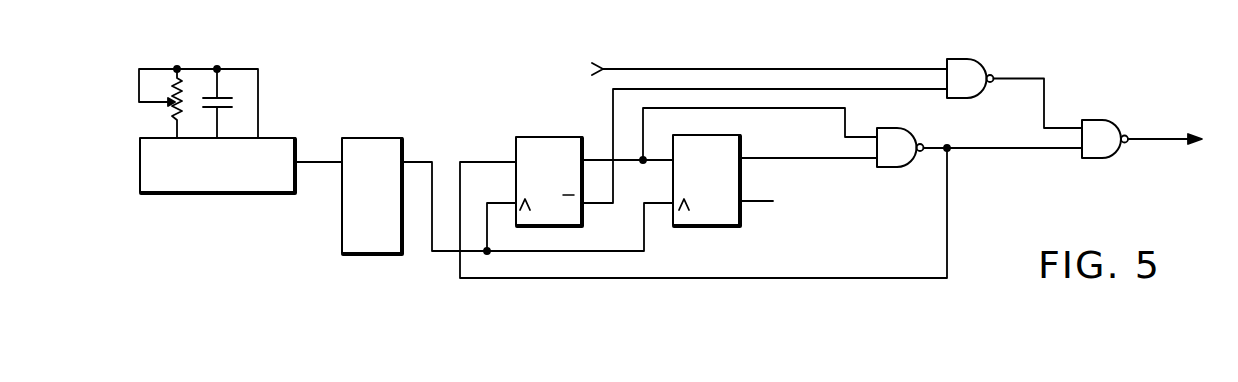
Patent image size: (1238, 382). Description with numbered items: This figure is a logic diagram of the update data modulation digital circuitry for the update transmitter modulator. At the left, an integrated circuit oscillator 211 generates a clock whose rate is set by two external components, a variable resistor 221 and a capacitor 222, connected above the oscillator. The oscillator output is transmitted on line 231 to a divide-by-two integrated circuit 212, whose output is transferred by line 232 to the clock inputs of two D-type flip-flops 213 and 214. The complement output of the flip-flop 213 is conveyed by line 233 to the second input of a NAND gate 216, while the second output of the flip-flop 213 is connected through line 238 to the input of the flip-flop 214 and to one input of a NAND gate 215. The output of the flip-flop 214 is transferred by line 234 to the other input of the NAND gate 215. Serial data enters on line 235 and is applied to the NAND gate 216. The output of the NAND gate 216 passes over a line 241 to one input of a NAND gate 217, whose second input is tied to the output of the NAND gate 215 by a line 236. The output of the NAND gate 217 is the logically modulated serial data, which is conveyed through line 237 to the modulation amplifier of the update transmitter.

The integrated circuit oscillator 211 is at (267, 143).
The variable resistor 221 is at (172, 92).
The capacitor 222 is at (228, 100).
The line 231 is at (321, 160).
The divide-by-two integrated circuit 212 is at (380, 148).
The line 232 is at (422, 158).
The D-type flip-flop 213 is at (536, 146).
The line 238 is at (597, 157).
The line 233 is at (598, 204).
The D-type flip-flop 214 is at (724, 150).
The line 234 is at (800, 157).
The line 235 is at (652, 68).
The NAND gate 215 is at (903, 142).
The NAND gate 216 is at (980, 78).
The line 236 is at (931, 146).
The line 241 is at (1045, 94).
The NAND gate 217 is at (1100, 125).
The line 237 is at (1162, 137).